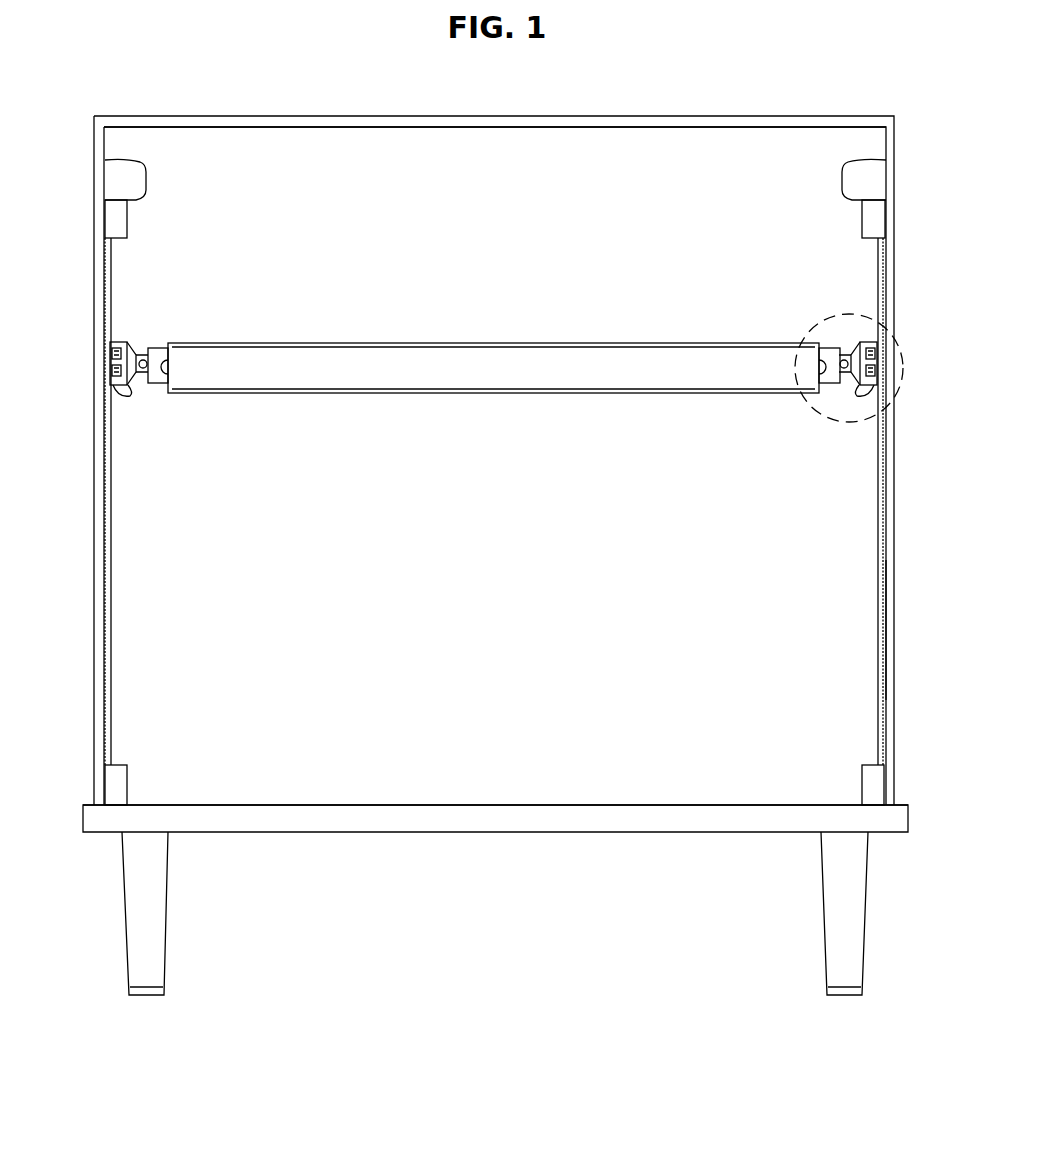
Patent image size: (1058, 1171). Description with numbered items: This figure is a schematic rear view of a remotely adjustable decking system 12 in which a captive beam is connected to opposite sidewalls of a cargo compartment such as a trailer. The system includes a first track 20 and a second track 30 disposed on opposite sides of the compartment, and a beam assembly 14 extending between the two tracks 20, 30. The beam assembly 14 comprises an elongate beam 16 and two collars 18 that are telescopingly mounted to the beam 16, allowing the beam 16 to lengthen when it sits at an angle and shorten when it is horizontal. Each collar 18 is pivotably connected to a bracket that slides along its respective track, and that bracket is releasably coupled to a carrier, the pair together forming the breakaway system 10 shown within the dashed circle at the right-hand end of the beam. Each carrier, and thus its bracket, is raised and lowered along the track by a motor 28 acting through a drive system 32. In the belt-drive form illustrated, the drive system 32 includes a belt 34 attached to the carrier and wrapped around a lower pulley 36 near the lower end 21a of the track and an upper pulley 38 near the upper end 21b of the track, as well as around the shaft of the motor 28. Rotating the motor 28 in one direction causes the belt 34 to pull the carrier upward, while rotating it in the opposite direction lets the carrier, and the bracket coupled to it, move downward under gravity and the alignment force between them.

The breakaway system 10 is at (905, 374).
The remotely adjustable decking system 12 is at (722, 84).
The beam assembly 14 is at (524, 337).
The elongate beam 16 is at (417, 376).
The collar 18 is at (158, 352).
The first track 20 is at (98, 519).
The lower end of the track 21a is at (886, 775).
The upper end of the track 21b is at (886, 141).
The motor 28 is at (119, 198).
The second track 30 is at (888, 628).
The drive system 32 is at (108, 262).
The belt 34 is at (108, 338).
The lower pulley 36 is at (122, 778).
The upper pulley 38 is at (123, 228).